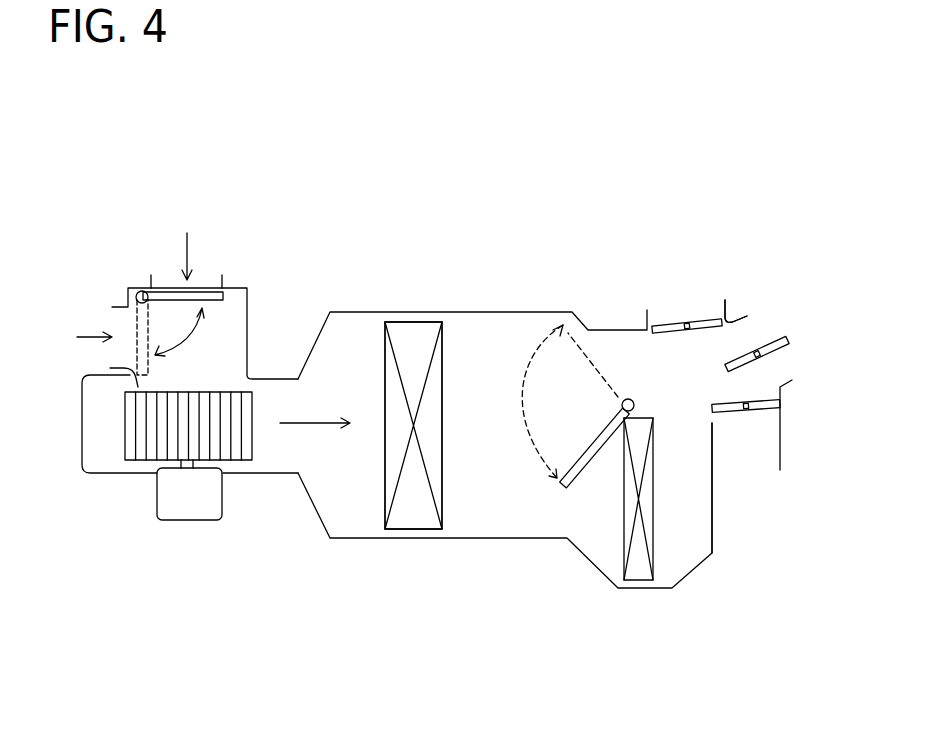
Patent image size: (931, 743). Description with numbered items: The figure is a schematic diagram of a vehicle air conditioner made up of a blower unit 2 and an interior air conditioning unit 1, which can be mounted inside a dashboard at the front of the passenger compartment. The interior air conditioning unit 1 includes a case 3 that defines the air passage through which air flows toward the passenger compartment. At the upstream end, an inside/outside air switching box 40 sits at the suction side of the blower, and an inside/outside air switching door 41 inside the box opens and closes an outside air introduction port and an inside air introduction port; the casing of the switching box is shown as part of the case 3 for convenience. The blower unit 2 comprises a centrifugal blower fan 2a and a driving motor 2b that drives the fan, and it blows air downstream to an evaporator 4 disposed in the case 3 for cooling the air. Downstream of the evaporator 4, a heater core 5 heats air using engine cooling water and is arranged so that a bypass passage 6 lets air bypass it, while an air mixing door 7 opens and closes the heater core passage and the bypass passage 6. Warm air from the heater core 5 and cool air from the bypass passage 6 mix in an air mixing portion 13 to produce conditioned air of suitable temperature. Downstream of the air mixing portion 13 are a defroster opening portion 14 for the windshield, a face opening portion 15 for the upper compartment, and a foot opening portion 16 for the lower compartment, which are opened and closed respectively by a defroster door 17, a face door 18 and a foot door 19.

The interior air conditioning unit 1 is at (508, 306).
The blower unit 2 is at (76, 448).
The centrifugal blower fan 2a is at (130, 452).
The driving motor 2b is at (190, 512).
The case 3 is at (417, 312).
The evaporator 4 is at (412, 517).
The heater core 5 is at (637, 573).
The bypass passage 6 is at (650, 373).
The air mixing door 7 is at (602, 437).
The air mixing portion 13 is at (693, 365).
The defroster opening portion 14 is at (687, 318).
The face opening portion 15 is at (768, 333).
The foot opening portion 16 is at (748, 432).
The defroster door 17 is at (713, 320).
The face door 18 is at (782, 352).
The foot door 19 is at (775, 407).
The inside/outside air switching box 40 is at (267, 342).
The inside/outside air switching door 41 is at (167, 295).